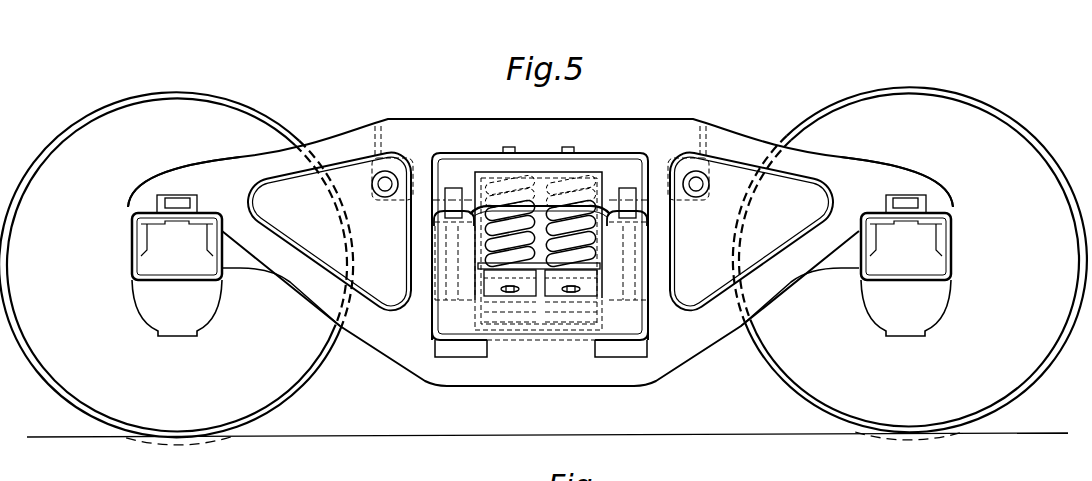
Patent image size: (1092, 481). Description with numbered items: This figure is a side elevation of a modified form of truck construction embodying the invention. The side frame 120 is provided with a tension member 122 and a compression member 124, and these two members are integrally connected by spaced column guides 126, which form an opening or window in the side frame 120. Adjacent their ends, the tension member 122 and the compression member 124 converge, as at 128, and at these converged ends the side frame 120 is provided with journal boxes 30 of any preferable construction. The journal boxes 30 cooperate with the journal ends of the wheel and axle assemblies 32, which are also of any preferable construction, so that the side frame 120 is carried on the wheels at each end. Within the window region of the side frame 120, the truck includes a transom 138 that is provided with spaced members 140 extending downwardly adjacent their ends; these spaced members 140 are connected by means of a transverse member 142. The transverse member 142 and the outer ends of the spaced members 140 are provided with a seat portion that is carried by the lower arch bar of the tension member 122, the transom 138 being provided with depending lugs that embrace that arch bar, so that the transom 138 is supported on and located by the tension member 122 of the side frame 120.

The journal boxes 30 is at (137, 290).
The wheel and axle assemblies 32 is at (85, 140).
The side frame 120 is at (667, 128).
The tension member 122 is at (697, 337).
The compression member 124 is at (572, 127).
The column guides 126 is at (660, 242).
The converging portions 128 is at (238, 167).
The transom 138 is at (446, 242).
The spaced members 140 is at (447, 273).
The transverse member 142 is at (536, 341).